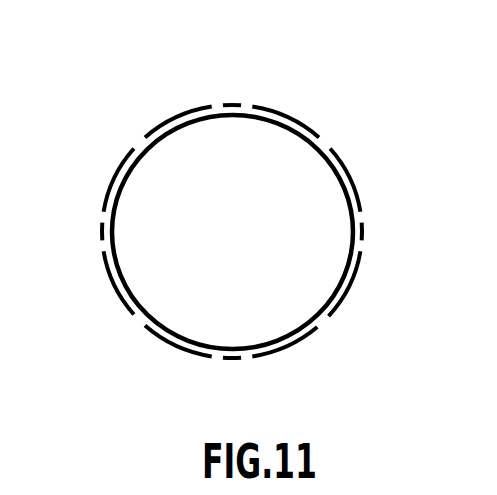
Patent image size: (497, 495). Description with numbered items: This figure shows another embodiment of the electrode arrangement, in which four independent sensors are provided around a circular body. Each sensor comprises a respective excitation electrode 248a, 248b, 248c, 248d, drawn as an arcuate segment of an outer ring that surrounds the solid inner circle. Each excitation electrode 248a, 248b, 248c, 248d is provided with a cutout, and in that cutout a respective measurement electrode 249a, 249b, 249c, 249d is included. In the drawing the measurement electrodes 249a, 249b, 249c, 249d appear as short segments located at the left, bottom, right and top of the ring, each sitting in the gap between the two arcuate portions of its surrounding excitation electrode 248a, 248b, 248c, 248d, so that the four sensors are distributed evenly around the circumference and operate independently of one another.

The excitation electrode 248a is at (117, 172).
The excitation electrode 248b is at (171, 343).
The excitation electrode 248c is at (350, 285).
The excitation electrode 248d is at (173, 118).
The measurement electrode 249a is at (101, 232).
The measurement electrode 249b is at (235, 360).
The measurement electrode 249c is at (364, 230).
The measurement electrode 249d is at (233, 104).